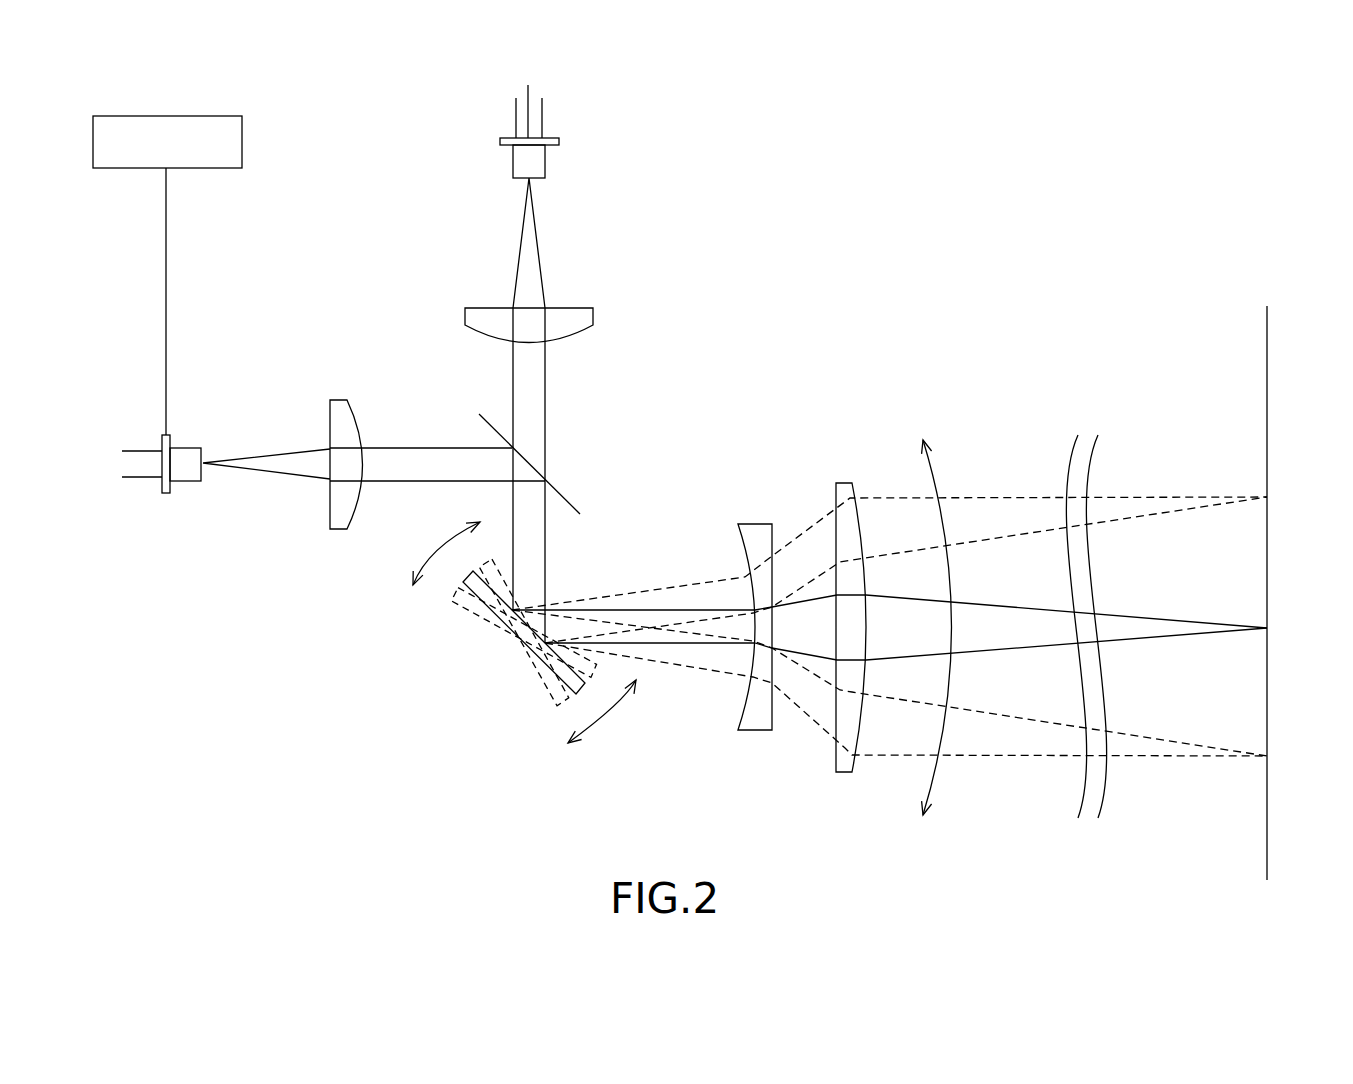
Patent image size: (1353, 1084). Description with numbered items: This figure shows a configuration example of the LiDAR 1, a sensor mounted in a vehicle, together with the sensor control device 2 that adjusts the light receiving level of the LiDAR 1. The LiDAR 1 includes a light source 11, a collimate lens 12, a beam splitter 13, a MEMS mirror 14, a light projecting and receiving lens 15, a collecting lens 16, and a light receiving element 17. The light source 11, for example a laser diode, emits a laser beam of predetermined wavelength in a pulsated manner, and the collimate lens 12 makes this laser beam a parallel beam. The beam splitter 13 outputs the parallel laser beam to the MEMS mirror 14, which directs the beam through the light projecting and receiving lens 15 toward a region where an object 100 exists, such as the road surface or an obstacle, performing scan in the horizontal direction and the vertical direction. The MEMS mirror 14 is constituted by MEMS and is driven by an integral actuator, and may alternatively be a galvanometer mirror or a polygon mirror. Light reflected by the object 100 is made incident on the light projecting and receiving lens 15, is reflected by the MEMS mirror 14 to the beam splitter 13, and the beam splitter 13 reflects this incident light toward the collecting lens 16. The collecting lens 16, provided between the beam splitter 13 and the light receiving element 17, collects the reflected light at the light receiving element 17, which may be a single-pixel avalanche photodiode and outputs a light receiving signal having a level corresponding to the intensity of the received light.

The LiDAR 1 is at (925, 212).
The sensor control device 2 is at (242, 143).
The light source 11 is at (546, 160).
The collimate lens 12 is at (594, 317).
The beam splitter 13 is at (566, 500).
The MEMS mirror 14 is at (548, 672).
The light projecting and receiving lens 15 is at (857, 478).
The collecting lens 16 is at (342, 400).
The light receiving element 17 is at (163, 495).
The object 100 is at (1270, 330).